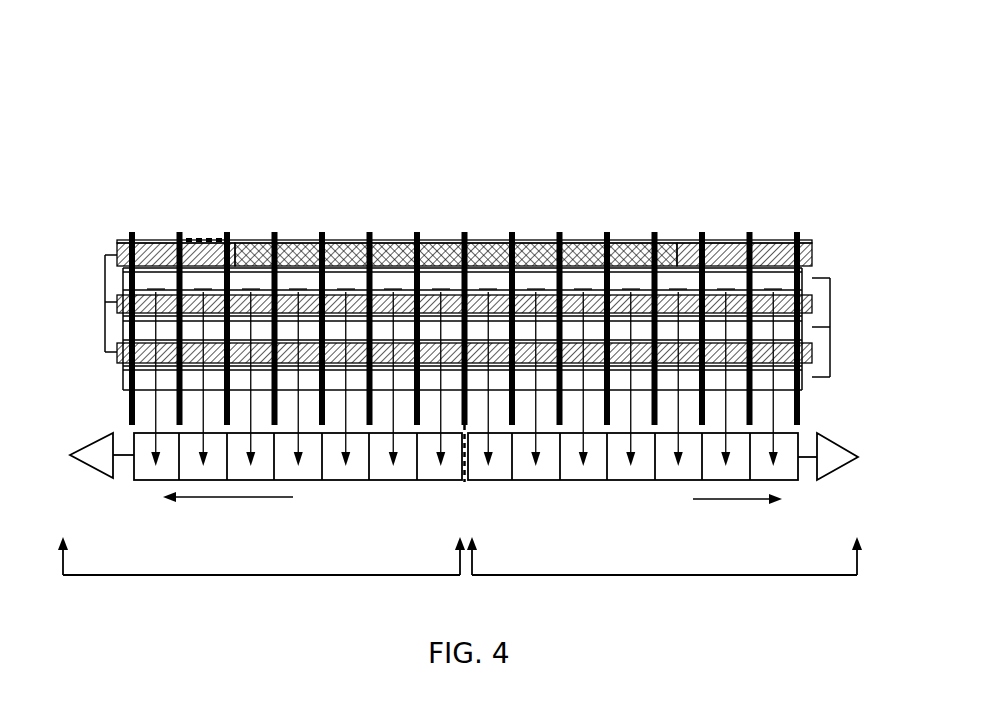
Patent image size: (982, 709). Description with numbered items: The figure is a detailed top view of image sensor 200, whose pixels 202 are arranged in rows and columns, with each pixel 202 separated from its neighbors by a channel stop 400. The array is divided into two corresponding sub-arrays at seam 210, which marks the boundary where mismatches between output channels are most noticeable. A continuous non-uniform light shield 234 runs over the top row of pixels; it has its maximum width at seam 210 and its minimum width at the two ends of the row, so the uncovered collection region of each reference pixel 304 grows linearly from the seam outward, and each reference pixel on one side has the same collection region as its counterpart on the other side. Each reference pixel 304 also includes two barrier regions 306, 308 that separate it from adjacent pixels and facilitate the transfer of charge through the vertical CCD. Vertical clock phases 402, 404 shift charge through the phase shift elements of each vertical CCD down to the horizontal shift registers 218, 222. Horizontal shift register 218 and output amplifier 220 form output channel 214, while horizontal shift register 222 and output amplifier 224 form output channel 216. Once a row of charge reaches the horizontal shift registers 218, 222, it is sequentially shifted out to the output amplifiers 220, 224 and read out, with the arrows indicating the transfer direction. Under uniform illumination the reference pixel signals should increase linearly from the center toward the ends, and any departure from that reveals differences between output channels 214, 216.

The image sensor 200 is at (631, 100).
The pixel 202 is at (208, 232).
The seam 210 is at (464, 232).
The output channel 214 is at (261, 569).
The output channel 216 is at (664, 573).
The horizontal shift register 218 is at (365, 481).
The output amplifier 220 is at (113, 478).
The horizontal shift register 222 is at (622, 482).
The output amplifier 224 is at (838, 470).
The continuous non-uniform light shield 234 is at (393, 245).
The reference pixel 304 is at (667, 243).
The barrier region 306 is at (717, 293).
The barrier region 308 is at (152, 247).
The channel stop 400 is at (129, 232).
The vertical clock phase 402 is at (105, 255).
The vertical clock phase 404 is at (830, 278).